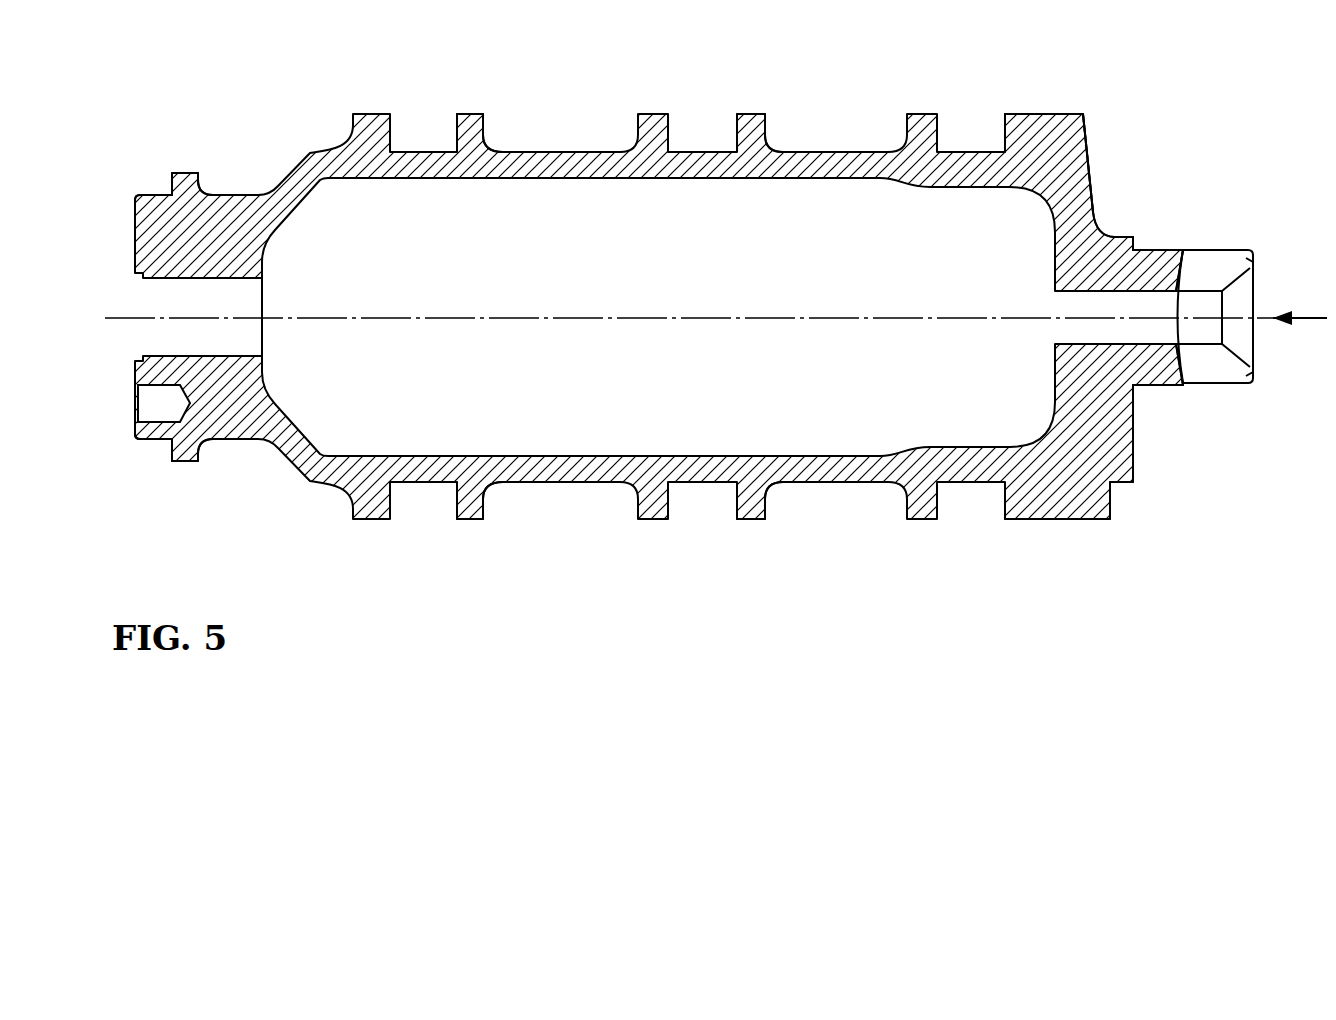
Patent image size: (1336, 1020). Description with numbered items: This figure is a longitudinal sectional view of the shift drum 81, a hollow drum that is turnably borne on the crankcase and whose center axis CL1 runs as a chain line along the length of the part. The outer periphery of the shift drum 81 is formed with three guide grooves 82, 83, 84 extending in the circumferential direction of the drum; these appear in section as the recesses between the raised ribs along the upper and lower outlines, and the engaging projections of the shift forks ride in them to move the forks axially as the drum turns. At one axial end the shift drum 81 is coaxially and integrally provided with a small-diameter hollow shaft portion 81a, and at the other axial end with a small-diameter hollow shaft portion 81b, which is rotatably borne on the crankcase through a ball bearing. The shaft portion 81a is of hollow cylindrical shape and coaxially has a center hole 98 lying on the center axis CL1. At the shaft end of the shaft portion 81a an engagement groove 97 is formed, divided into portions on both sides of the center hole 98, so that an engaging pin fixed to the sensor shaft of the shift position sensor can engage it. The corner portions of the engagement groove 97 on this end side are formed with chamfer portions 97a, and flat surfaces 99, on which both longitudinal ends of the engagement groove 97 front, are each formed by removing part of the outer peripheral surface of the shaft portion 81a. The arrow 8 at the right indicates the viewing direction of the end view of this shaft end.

The shift drum 81 is at (591, 162).
The hollow shaft portion 81a is at (1155, 247).
The hollow shaft portion 81b is at (158, 205).
The guide groove 82 is at (737, 132).
The guide groove 83 is at (1005, 132).
The guide groove 84 is at (457, 133).
The engagement groove 97 is at (1181, 360).
The chamfer portion 97a is at (1252, 267).
The center hole 98 is at (1093, 341).
The flat surface 99 is at (1205, 250).
The center axis CL1 is at (612, 317).
The arrow 8 is at (1302, 347).